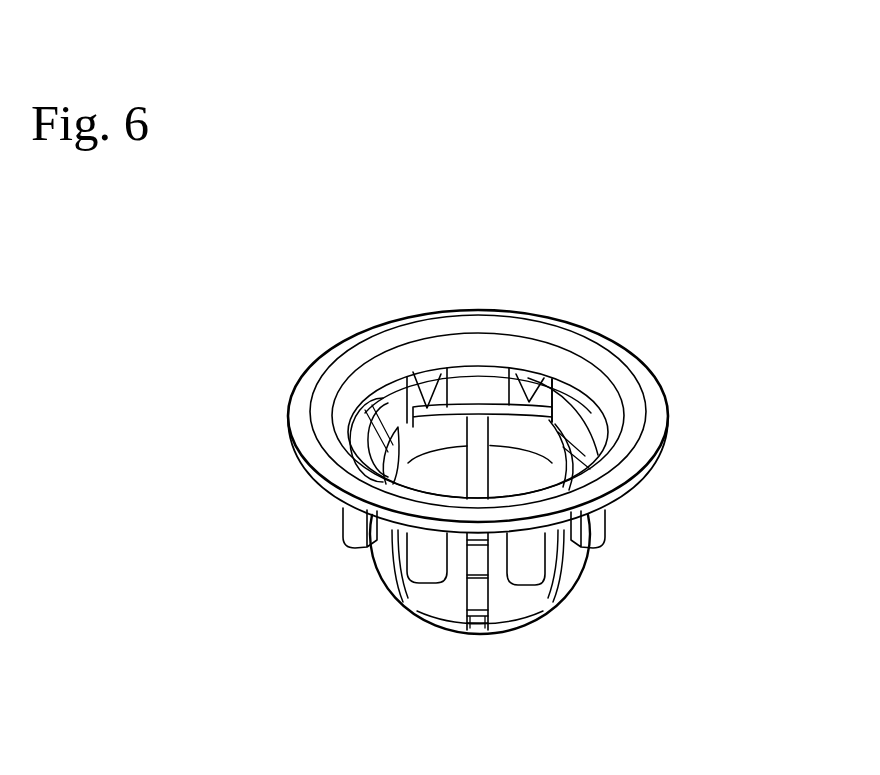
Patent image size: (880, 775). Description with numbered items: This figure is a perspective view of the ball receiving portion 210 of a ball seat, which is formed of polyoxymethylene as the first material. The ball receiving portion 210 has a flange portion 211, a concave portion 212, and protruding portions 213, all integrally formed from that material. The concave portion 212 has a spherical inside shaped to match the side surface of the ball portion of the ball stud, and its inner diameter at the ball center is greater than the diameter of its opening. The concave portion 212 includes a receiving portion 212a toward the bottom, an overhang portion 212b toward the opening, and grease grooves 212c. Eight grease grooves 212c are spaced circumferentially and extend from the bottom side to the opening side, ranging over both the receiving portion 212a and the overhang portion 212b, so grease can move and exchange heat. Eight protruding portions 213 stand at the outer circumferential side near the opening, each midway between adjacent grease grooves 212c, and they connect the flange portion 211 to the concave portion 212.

The ball receiving portion 210 is at (464, 296).
The flange portion 211 is at (363, 346).
The concave portion 212 is at (366, 569).
The receiving portion 212a is at (535, 472).
The overhang portion 212b is at (522, 434).
The grease grooves 212c is at (490, 475).
The protruding portions 213 is at (424, 388).